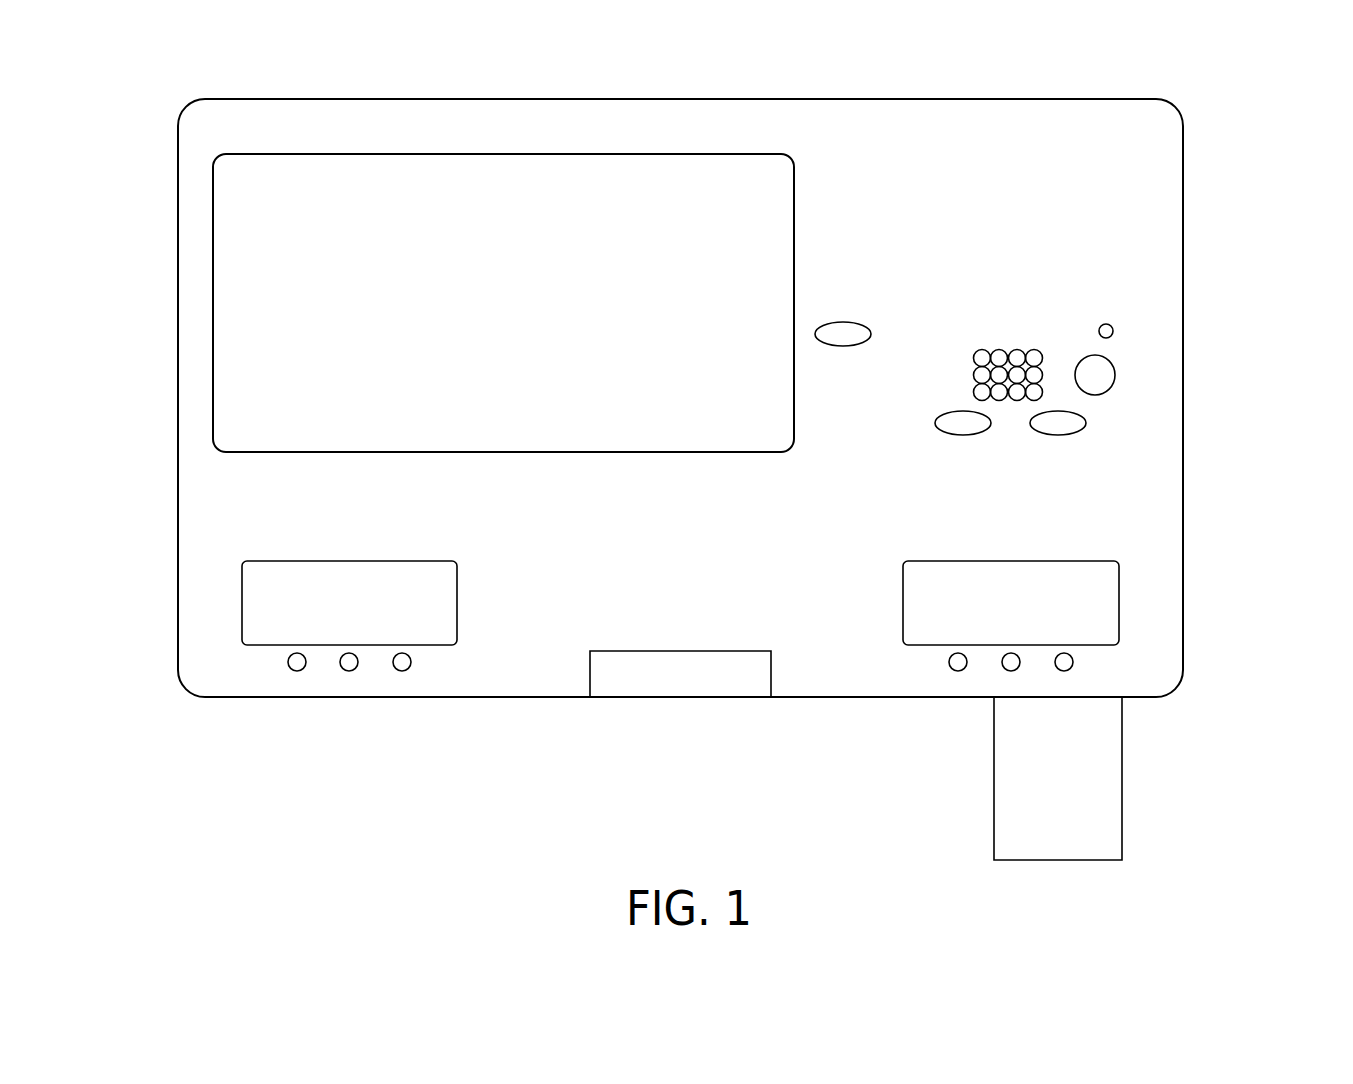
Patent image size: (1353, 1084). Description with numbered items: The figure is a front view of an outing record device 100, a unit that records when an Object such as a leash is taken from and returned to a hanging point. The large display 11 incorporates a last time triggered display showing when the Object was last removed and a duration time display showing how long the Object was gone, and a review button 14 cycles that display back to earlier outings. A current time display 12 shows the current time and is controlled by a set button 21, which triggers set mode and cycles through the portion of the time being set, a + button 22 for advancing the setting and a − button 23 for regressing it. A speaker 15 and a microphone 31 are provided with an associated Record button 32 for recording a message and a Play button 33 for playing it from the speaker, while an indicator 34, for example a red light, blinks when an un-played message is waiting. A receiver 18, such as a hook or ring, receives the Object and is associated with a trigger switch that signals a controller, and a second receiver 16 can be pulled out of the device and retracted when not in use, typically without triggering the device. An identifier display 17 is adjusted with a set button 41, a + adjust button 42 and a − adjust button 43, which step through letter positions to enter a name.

The outing record device 100 is at (1183, 187).
The display 11 is at (213, 302).
The current time display 12 is at (242, 593).
The review button 14 is at (843, 322).
The speaker 15 is at (1006, 350).
The second receiver 16 is at (688, 651).
The identifier display 17 is at (1119, 587).
The receiver 18 is at (1122, 777).
The set button 21 is at (297, 671).
The + button 22 is at (349, 671).
The − button 23 is at (402, 671).
The microphone 31 is at (1115, 373).
The Record button 32 is at (963, 435).
The Play button 33 is at (1058, 435).
The indicator 34 is at (1106, 324).
The set button 41 is at (949, 662).
The + adjust button 42 is at (1005, 669).
The − adjust button 43 is at (1073, 660).